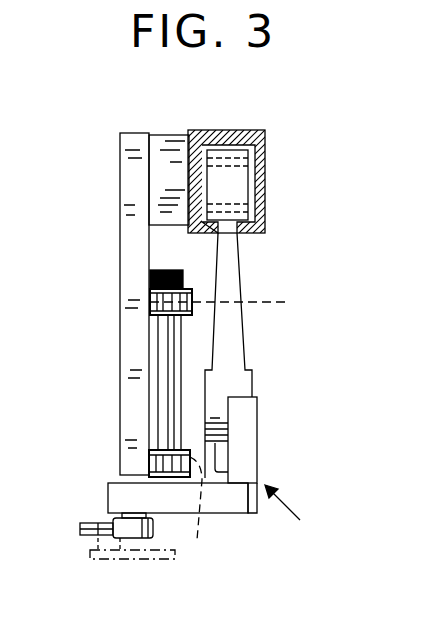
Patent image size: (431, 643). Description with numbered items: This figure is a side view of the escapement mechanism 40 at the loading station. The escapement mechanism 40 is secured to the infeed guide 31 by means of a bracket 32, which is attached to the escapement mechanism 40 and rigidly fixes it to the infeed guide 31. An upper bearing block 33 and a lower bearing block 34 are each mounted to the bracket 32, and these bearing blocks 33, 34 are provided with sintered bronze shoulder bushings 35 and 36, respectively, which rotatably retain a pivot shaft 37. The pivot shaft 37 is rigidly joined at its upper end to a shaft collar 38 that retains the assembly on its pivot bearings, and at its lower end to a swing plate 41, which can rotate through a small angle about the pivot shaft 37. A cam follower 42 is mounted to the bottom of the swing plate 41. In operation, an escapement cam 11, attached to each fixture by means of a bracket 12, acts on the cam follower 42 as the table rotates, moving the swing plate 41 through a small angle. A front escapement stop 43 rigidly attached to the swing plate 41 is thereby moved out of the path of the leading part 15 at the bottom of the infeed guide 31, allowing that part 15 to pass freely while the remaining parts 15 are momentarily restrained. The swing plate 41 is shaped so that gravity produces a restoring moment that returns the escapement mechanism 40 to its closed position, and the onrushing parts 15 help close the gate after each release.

The escapement cam 11 is at (92, 522).
The bracket 12 is at (140, 560).
The part 15 is at (233, 253).
The infeed guide 31 is at (265, 143).
The bracket 32 is at (133, 344).
The upper bearing block 33 is at (152, 300).
The lower bearing block 34 is at (183, 465).
The sintered bronze shoulder bushing 35 is at (232, 303).
The sintered bronze shoulder bushing 36 is at (194, 510).
The pivot shaft 37 is at (168, 393).
The shaft collar 38 is at (157, 270).
The escapement mechanism 40 is at (300, 517).
The swing plate 41 is at (227, 502).
The cam follower 42 is at (80, 527).
The front escapement stop 43 is at (250, 428).